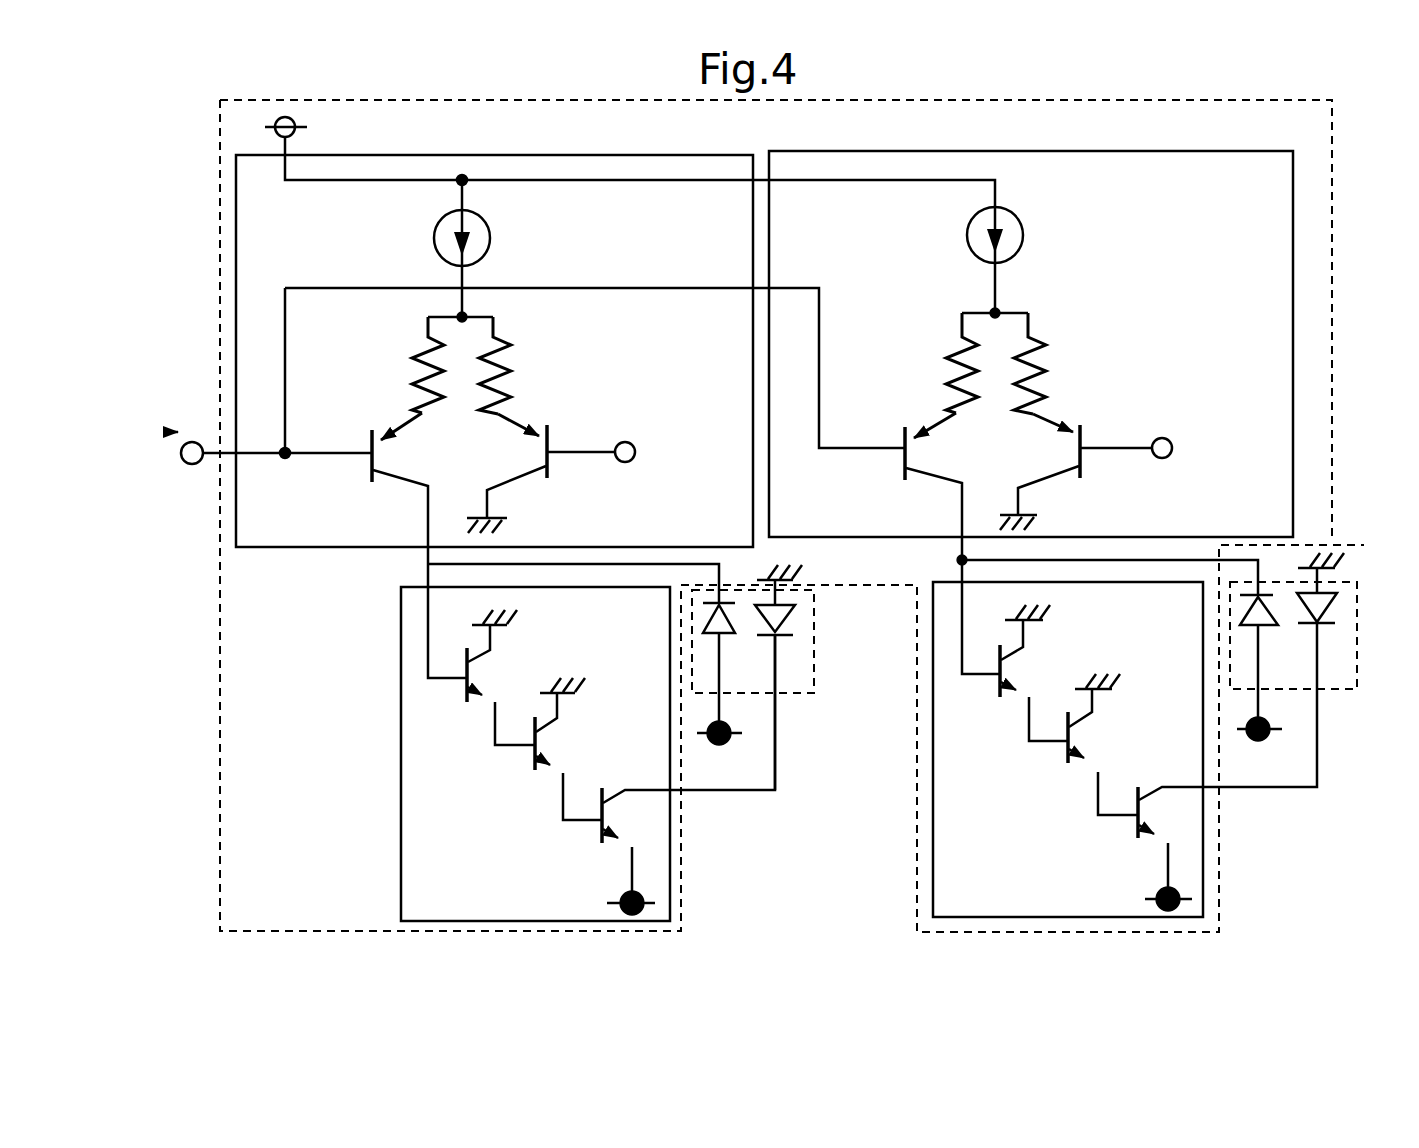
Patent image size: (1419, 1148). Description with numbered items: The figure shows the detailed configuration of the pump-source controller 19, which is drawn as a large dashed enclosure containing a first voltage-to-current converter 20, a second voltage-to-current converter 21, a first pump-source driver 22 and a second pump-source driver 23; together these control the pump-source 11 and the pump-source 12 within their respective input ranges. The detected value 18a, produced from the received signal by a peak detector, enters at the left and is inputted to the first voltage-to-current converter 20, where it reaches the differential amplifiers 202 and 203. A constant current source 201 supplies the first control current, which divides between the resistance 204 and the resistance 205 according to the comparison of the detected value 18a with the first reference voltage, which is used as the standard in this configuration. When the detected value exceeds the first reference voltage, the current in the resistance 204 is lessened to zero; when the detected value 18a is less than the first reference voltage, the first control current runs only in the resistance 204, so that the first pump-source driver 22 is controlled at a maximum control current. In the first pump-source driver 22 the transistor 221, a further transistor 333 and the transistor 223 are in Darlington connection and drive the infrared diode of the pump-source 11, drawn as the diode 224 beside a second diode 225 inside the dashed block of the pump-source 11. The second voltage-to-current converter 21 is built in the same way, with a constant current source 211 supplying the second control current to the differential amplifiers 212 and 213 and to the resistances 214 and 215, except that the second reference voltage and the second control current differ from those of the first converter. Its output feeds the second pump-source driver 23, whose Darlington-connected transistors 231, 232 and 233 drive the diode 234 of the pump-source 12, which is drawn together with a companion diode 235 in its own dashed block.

The pump-source controller 19 is at (1334, 239).
The first voltage-to-current converter 20 is at (437, 155).
The second voltage-to-current converter 21 is at (970, 150).
The first pump-source driver 22 is at (400, 737).
The second pump-source driver 23 is at (933, 732).
The pump-source 11 is at (803, 585).
The pump-source 12 is at (1347, 573).
The detected value 18a is at (185, 426).
The constant current source 201 is at (490, 217).
The differential amplifier 202 is at (360, 463).
The differential amplifier 203 is at (557, 463).
The resistance 204 is at (403, 368).
The resistance 205 is at (518, 362).
The constant current source 211 is at (1023, 215).
The differential amplifier 212 is at (893, 462).
The differential amplifier 213 is at (1092, 460).
The resistance 214 is at (940, 360).
The resistance 215 is at (1052, 360).
The transistor 221 is at (488, 713).
The transistor 333 is at (552, 775).
The transistor 223 is at (617, 847).
The diode 224 is at (727, 637).
The diode 225 is at (785, 637).
The transistor 231 is at (1025, 708).
The transistor 232 is at (1087, 770).
The transistor 233 is at (1152, 843).
The diode 234 is at (1263, 633).
The diode 235 is at (1322, 627).